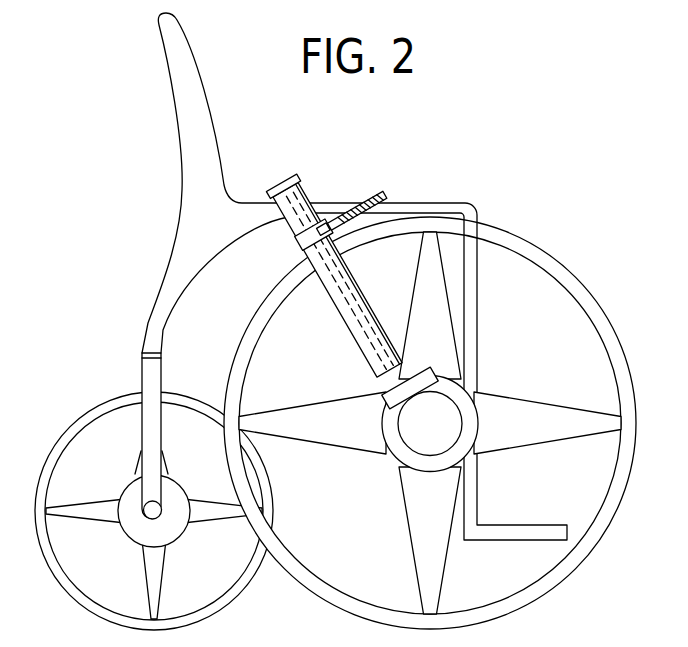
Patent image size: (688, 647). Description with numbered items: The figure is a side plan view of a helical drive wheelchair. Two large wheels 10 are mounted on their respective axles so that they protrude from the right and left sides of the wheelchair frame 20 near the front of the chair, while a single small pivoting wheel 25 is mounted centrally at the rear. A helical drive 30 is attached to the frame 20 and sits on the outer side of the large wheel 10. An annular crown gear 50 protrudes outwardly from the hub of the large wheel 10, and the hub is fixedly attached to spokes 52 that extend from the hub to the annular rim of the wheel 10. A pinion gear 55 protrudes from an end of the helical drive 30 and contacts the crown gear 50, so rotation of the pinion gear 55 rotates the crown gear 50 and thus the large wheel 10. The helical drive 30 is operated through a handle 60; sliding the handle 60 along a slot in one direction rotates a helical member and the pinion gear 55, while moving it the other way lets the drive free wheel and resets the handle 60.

The large wheel 10 is at (585, 287).
The wheelchair frame 20 is at (179, 243).
The small pivoting wheel 25 is at (120, 391).
The helical drive 30 is at (317, 179).
The annular crown gear 50 is at (472, 448).
The spokes 52 is at (563, 405).
The pinion gear 55 is at (440, 372).
The handle 60 is at (388, 196).